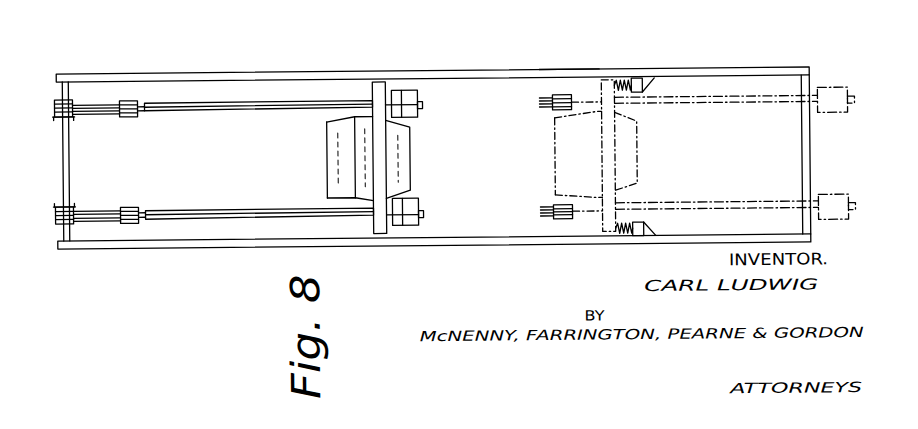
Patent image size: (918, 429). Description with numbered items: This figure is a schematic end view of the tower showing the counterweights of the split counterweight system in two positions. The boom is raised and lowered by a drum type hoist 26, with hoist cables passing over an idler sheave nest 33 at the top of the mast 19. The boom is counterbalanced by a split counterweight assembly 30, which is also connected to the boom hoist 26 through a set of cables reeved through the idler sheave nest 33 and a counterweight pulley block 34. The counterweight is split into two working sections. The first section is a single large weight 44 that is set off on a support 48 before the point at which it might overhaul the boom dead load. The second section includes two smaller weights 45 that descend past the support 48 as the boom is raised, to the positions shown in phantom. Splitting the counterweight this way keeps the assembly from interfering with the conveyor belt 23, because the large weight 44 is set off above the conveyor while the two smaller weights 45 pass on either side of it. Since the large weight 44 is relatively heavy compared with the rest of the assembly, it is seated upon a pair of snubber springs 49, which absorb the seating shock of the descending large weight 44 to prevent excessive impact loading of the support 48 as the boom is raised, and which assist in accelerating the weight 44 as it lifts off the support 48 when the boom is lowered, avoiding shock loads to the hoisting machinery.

The mast 19 is at (461, 70).
The conveyor belt 23 is at (650, 163).
The drum type hoist 26 is at (622, 0).
The split counterweight assembly 30 is at (359, 95).
The idler sheave nest 33 is at (59, 119).
The counterweight pulley block 34 is at (128, 205).
The large weight 44 is at (328, 157).
The smaller weights 45 is at (412, 111).
The support 48 is at (648, 70).
The snubber spring 49 is at (620, 70).